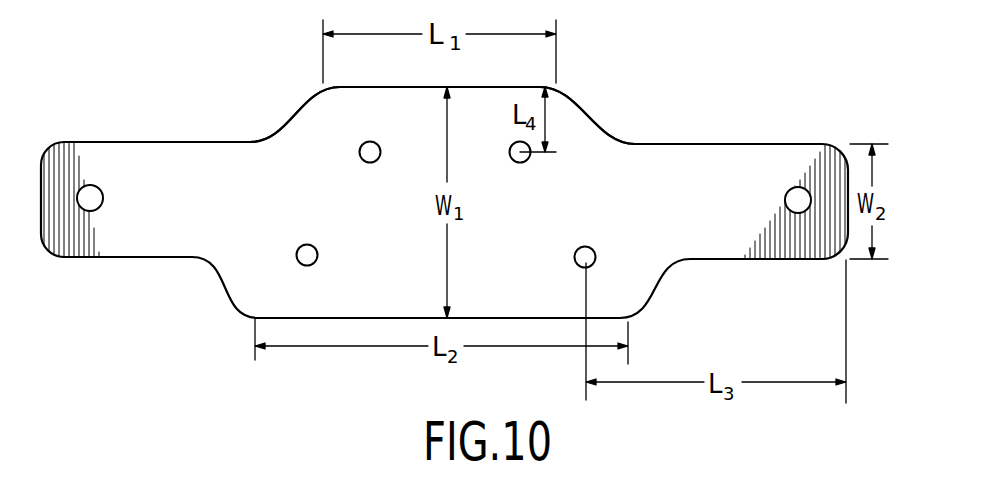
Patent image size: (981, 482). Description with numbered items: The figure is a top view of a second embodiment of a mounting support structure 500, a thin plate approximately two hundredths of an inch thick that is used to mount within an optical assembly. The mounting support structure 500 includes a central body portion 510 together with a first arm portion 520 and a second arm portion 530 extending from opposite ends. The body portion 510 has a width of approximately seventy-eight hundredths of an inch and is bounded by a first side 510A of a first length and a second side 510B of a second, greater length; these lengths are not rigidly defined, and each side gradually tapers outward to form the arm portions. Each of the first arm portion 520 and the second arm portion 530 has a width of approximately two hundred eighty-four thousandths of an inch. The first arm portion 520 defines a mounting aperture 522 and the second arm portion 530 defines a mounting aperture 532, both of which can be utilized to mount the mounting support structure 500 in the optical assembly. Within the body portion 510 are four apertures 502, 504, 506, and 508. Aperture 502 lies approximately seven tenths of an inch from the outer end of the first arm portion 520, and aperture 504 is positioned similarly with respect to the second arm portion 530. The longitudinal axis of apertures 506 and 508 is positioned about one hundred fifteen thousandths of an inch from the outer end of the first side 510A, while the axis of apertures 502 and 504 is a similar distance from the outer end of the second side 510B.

The mounting support structure 500 is at (641, 106).
The aperture 502 is at (588, 256).
The aperture 504 is at (300, 252).
The aperture 506 is at (367, 153).
The aperture 508 is at (522, 155).
The body portion 510 is at (373, 82).
The first side 510A is at (524, 82).
The second side 510B is at (357, 318).
The first arm portion 520 is at (672, 143).
The mounting aperture 522 is at (798, 200).
The second arm portion 530 is at (190, 142).
The mounting aperture 532 is at (88, 200).